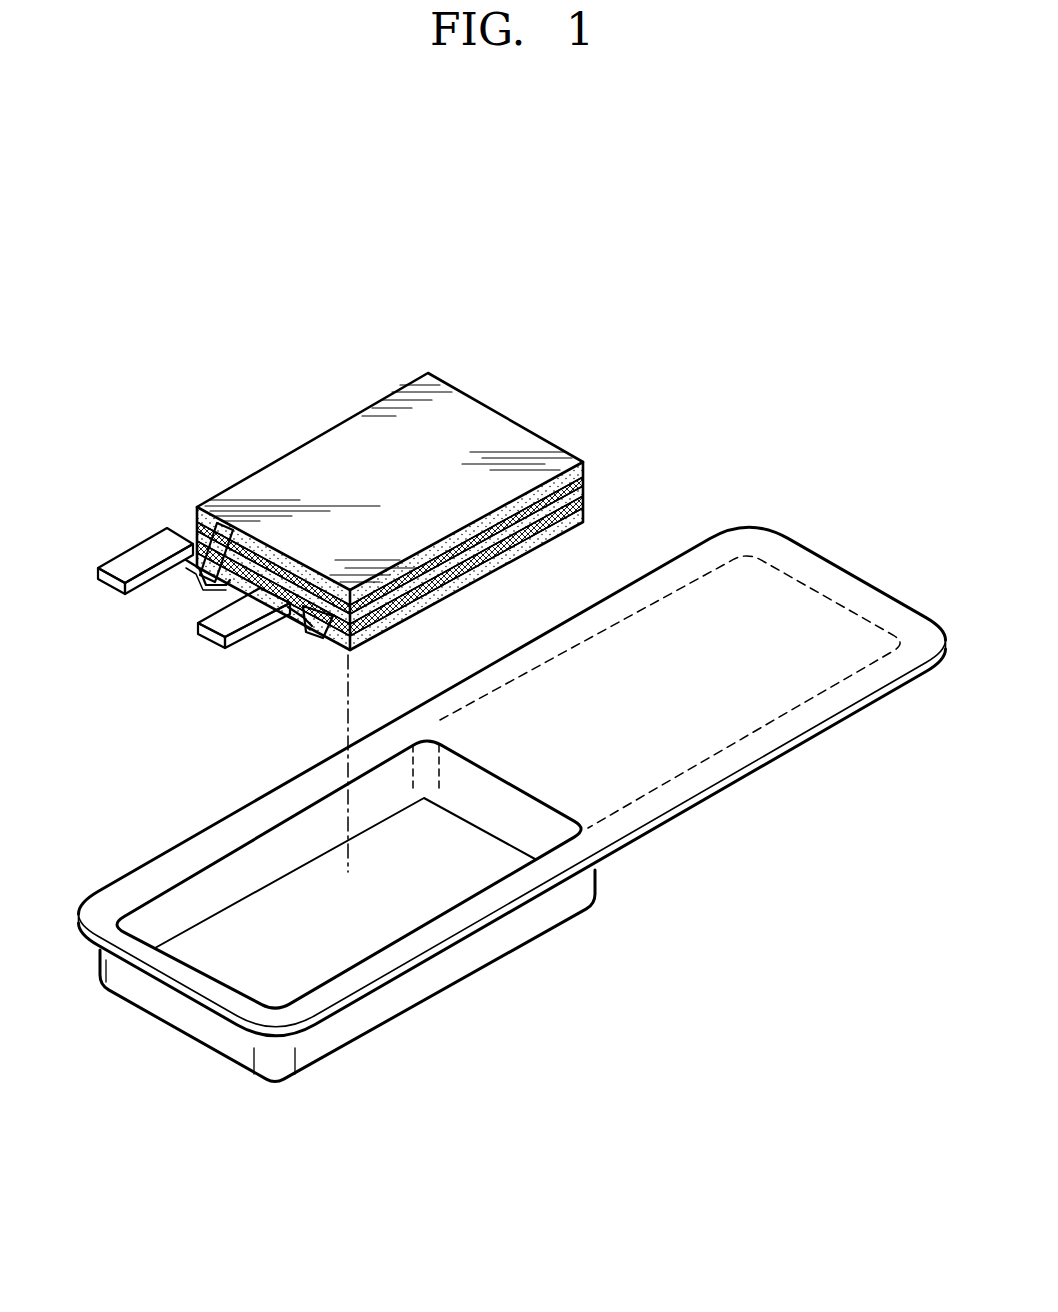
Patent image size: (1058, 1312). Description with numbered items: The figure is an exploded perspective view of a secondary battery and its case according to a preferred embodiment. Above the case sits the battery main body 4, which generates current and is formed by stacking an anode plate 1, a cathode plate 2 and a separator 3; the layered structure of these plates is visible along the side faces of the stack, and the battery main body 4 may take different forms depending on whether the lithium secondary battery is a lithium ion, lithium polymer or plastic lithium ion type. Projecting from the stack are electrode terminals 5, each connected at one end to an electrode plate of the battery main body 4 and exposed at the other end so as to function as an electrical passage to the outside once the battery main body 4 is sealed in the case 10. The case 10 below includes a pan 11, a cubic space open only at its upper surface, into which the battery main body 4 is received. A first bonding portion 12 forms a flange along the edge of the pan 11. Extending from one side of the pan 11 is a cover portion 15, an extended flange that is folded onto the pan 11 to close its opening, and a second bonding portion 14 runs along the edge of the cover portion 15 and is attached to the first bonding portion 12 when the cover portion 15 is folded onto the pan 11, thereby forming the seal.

The anode plate 1 is at (583, 477).
The cathode plate 2 is at (427, 568).
The separator 3 is at (583, 498).
The battery main body 4 is at (451, 511).
The electrode terminal 5 is at (130, 560).
The case 10 is at (496, 827).
The pan 11 is at (140, 997).
The first bonding portion 12 is at (253, 1014).
The second bonding portion 14 is at (840, 697).
The cover portion 15 is at (783, 625).